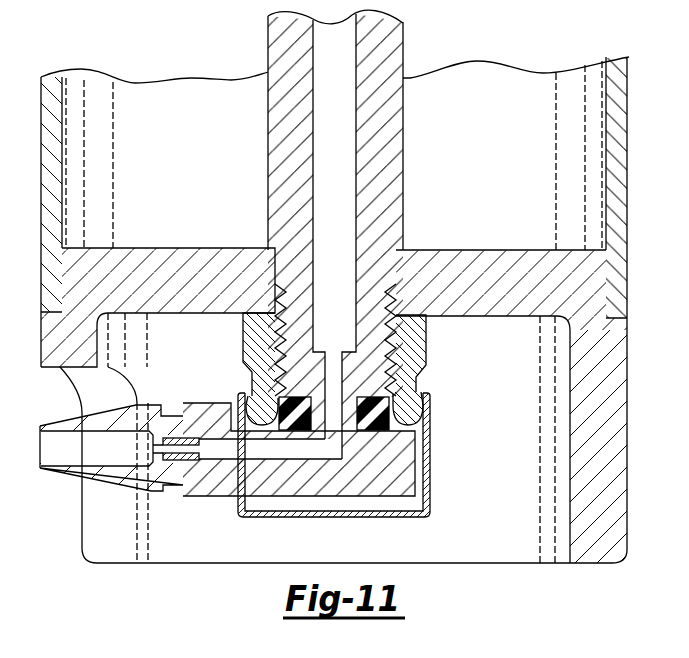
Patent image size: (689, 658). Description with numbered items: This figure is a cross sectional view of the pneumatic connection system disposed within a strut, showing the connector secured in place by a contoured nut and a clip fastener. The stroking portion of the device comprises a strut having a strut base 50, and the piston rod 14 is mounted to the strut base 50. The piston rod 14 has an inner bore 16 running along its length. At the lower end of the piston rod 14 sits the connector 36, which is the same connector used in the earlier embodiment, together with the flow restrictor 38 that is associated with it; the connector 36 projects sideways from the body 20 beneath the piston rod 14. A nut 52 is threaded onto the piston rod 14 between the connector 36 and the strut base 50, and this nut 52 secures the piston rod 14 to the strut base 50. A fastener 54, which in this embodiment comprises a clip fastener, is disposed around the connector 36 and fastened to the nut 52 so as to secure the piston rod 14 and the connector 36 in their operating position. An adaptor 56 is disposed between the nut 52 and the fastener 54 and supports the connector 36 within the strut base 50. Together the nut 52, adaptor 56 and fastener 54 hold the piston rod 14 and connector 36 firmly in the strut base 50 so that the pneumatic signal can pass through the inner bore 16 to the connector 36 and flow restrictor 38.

The piston rod 14 is at (403, 157).
The inner bore 16 is at (340, 122).
The body 20 is at (221, 460).
The connector 36 is at (72, 468).
The flow restrictor 38 is at (193, 456).
The strut base 50 is at (485, 265).
The nut 52 is at (410, 347).
The fastener 54 is at (430, 482).
The adaptor 56 is at (377, 402).